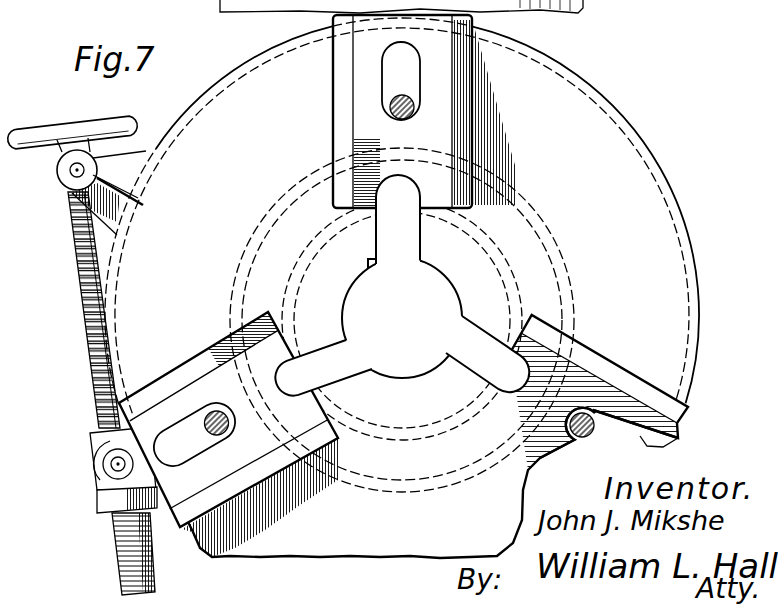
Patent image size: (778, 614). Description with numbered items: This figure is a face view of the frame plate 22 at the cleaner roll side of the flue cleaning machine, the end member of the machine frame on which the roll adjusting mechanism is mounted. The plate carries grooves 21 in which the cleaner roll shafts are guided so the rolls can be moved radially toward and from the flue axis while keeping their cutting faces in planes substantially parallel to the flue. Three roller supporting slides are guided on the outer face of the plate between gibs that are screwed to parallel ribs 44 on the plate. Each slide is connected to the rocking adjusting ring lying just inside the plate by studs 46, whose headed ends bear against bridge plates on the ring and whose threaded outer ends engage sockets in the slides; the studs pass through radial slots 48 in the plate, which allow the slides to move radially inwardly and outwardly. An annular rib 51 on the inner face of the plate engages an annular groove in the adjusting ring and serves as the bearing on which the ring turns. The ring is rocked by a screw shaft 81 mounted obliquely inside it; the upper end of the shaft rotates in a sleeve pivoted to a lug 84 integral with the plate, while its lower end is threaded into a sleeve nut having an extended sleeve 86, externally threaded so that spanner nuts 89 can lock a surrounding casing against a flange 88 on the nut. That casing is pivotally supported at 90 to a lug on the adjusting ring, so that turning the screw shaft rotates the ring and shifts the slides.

The grooves 21 is at (402, 285).
The frame plate 22 is at (643, 182).
The parallel ribs 44 is at (346, 77).
The studs 46 is at (406, 114).
The radial slots 48 is at (401, 62).
The annular rib 51 is at (557, 257).
The screw shaft 81 is at (80, 284).
The lug 84 is at (128, 165).
The extended sleeve 86 is at (126, 532).
The flange 88 is at (90, 434).
The spanner nuts 89 is at (97, 501).
The pivot 90 is at (112, 465).